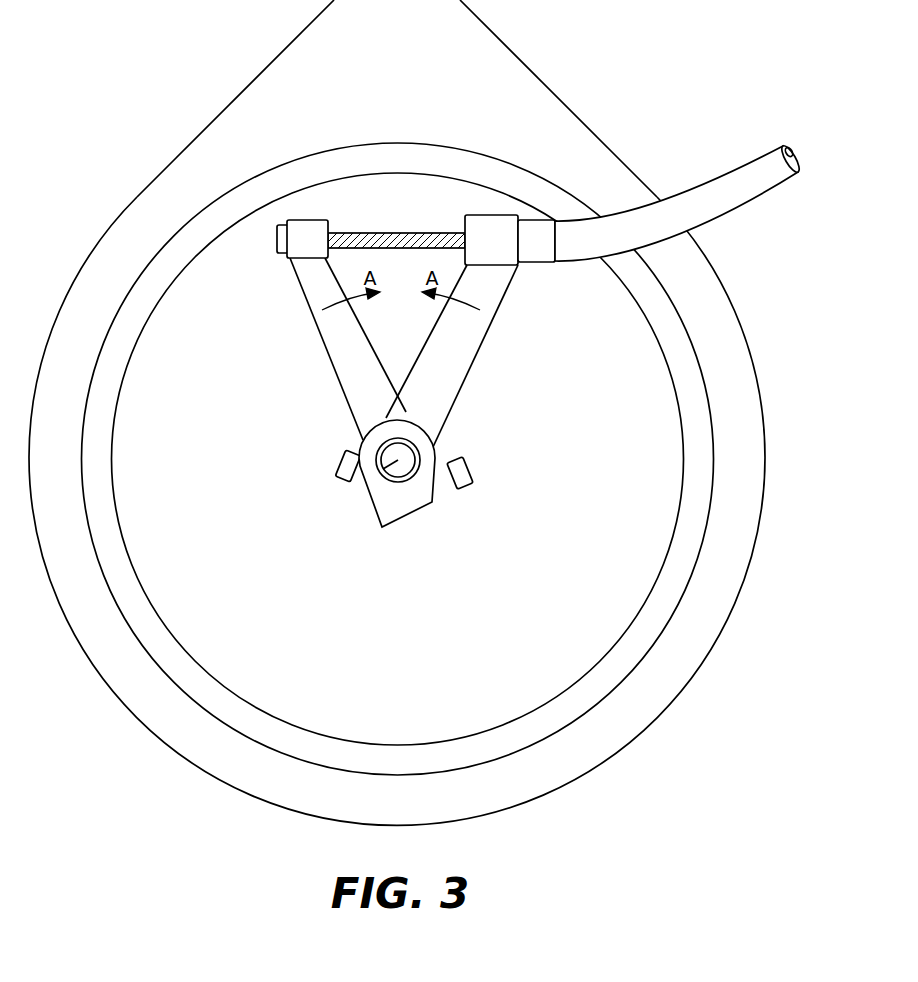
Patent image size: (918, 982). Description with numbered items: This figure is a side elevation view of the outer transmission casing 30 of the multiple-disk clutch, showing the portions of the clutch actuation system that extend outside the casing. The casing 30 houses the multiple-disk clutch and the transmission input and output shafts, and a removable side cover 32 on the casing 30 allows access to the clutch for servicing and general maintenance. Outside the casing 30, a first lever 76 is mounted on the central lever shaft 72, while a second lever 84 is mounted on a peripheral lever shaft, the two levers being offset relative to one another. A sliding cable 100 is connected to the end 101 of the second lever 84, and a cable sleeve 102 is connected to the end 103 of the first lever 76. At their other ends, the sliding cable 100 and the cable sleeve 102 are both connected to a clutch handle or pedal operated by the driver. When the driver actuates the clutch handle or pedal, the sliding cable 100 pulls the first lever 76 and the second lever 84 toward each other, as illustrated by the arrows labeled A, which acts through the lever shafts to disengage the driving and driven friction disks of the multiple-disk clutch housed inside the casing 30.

The transmission casing 30 is at (706, 656).
The removable side cover 32 is at (551, 642).
The central lever shaft 72 is at (368, 486).
The first lever 76 is at (470, 342).
The second lever 84 is at (337, 342).
The sliding cable 100 is at (397, 233).
The end of the second lever 101 is at (307, 227).
The cable sleeve 102 is at (730, 186).
The end of the first lever 103 is at (490, 223).